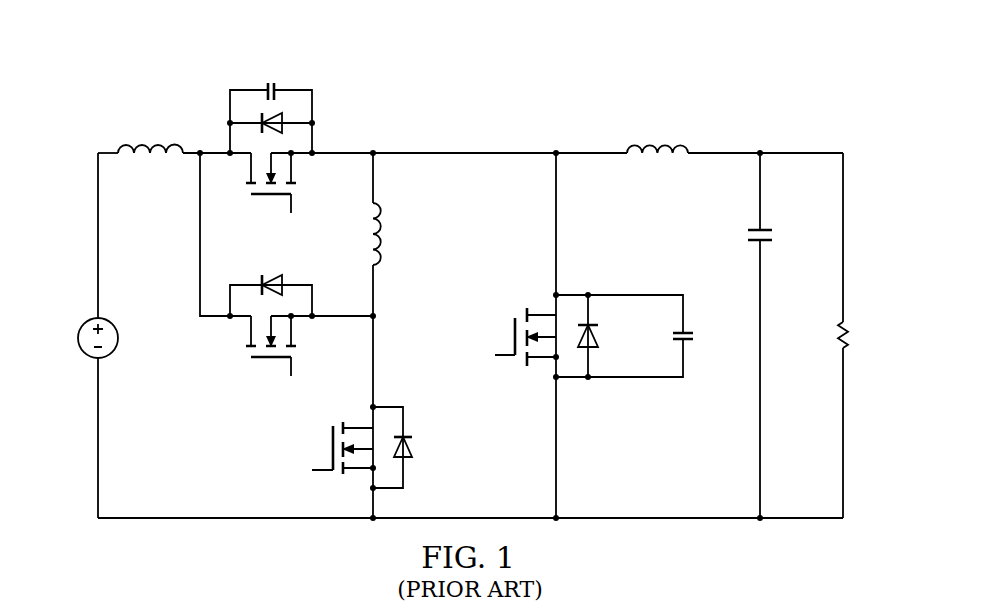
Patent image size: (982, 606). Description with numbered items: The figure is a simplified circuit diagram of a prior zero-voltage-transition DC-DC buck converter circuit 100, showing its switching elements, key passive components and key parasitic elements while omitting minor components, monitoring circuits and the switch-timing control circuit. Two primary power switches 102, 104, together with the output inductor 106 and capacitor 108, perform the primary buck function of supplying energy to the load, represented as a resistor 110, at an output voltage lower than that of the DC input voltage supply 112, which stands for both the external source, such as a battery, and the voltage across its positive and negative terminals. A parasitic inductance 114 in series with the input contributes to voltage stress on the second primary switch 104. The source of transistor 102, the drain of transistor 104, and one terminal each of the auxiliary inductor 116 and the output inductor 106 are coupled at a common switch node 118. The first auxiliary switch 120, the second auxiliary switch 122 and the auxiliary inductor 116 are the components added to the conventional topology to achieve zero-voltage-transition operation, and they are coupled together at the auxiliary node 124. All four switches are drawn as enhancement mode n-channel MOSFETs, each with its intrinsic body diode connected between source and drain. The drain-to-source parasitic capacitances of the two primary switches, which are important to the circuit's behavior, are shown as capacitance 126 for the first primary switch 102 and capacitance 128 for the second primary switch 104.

The ZVT DC-DC buck converter circuit 100 is at (598, 74).
The primary power switch S1 102 is at (262, 197).
The primary power switch S2 104 is at (514, 326).
The output inductor Lo 106 is at (680, 140).
The capacitor Co 108 is at (748, 235).
The resistor Ro 110 is at (837, 333).
The DC input voltage supply Vin 112 is at (80, 319).
The parasitic inductance Lbyp 114 is at (120, 136).
The auxiliary inductor La 116 is at (388, 212).
The switch node 118 is at (371, 158).
The first auxiliary switch Sa1 120 is at (262, 360).
The second auxiliary switch Sa2 122 is at (331, 434).
The auxiliary node 124 is at (370, 312).
The capacitance Cds1 126 is at (271, 80).
The capacitance Cds2 128 is at (672, 336).